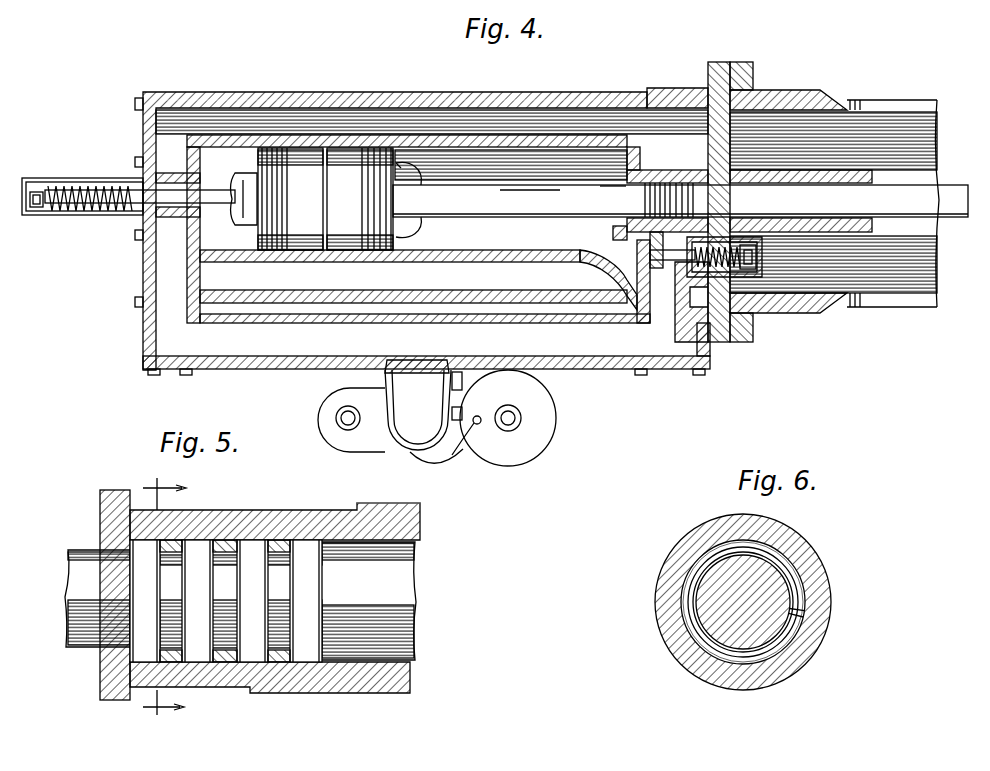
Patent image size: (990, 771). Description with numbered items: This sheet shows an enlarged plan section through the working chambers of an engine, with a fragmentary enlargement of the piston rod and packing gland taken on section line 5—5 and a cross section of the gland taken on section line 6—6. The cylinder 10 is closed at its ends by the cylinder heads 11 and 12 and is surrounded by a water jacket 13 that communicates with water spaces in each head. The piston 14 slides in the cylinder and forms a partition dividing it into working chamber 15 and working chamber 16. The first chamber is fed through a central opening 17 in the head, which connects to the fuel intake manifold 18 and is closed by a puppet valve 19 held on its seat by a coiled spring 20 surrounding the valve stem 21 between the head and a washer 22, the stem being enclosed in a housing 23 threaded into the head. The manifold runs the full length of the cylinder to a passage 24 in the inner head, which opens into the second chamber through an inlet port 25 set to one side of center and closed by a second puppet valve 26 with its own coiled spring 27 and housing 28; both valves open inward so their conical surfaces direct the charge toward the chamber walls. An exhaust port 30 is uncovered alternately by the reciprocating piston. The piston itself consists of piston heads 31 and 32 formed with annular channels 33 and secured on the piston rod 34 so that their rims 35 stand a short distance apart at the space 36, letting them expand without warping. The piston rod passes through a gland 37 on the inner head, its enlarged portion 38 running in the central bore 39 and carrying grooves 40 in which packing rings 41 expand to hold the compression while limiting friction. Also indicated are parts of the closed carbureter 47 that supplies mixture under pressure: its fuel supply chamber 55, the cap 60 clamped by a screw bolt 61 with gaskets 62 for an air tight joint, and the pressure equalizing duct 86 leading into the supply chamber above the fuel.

In FIG. 4, the section line 5— 5 is at (603, 188).
In FIG. 5, the section line 6— 6 is at (164, 596).
In FIG. 4, the cylinder 10 is at (460, 93).
In FIG. 5, the cylinder 10 is at (220, 545).
In FIG. 4, the cylinder head 11 is at (196, 92).
In FIG. 5, the cylinder head 11 is at (280, 545).
In FIG. 4, the cylinder head 12 is at (650, 90).
In FIG. 4, the water jacket 13 is at (513, 120).
In FIG. 4, the piston 14 is at (322, 137).
In FIG. 4, the working chamber 15 is at (230, 262).
In FIG. 4, the working chamber 16 is at (560, 152).
In FIG. 4, the central opening 17 is at (230, 223).
In FIG. 4, the fuel intake manifold 18 is at (268, 362).
In FIG. 4, the puppet valve 19 is at (233, 198).
In FIG. 4, the coiled spring 20 is at (100, 216).
In FIG. 4, the valve stem 21 is at (105, 188).
In FIG. 4, the washer 22 is at (62, 216).
In FIG. 4, the housing 23 is at (78, 186).
In FIG. 4, the passage 24 is at (582, 268).
In FIG. 4, the inlet port 25 is at (613, 234).
In FIG. 4, the puppet valve 26 is at (630, 252).
In FIG. 4, the coiled spring 27 is at (740, 278).
In FIG. 4, the housing 28 is at (760, 259).
In FIG. 4, the exhaust port 30 is at (428, 229).
In FIG. 4, the piston head 31 is at (258, 161).
In FIG. 4, the piston head 32 is at (432, 192).
In FIG. 4, the annular channels 33 is at (620, 183).
In FIG. 4, the piston rod 34 is at (513, 197).
In FIG. 5, the piston rod 34 is at (407, 595).
In FIG. 6, the piston rod 34 is at (768, 575).
In FIG. 4, the rims 35 is at (326, 199).
In FIG. 4, the space between rims 36 is at (326, 162).
In FIG. 4, the gland 37 is at (768, 171).
In FIG. 5, the gland 37 is at (284, 595).
In FIG. 6, the gland 37 is at (829, 582).
In FIG. 5, the enlarged portion 38 is at (312, 594).
In FIG. 4, the central bore 39 is at (826, 170).
In FIG. 5, the central bore 39 is at (413, 542).
In FIG. 4, the grooves 40 is at (667, 184).
In FIG. 6, the grooves 40 is at (710, 570).
In FIG. 4, the packing rings 41 is at (668, 255).
In FIG. 6, the packing rings 41 is at (690, 575).
In FIG. 4, the carbureter 47 is at (409, 458).
In FIG. 4, the fuel supply chamber 55 is at (543, 448).
In FIG. 4, the cap 60 is at (516, 455).
In FIG. 4, the screw bolt 61 is at (512, 412).
In FIG. 4, the gaskets 62 is at (522, 418).
In FIG. 4, the pressure equalizing duct 86 is at (467, 462).